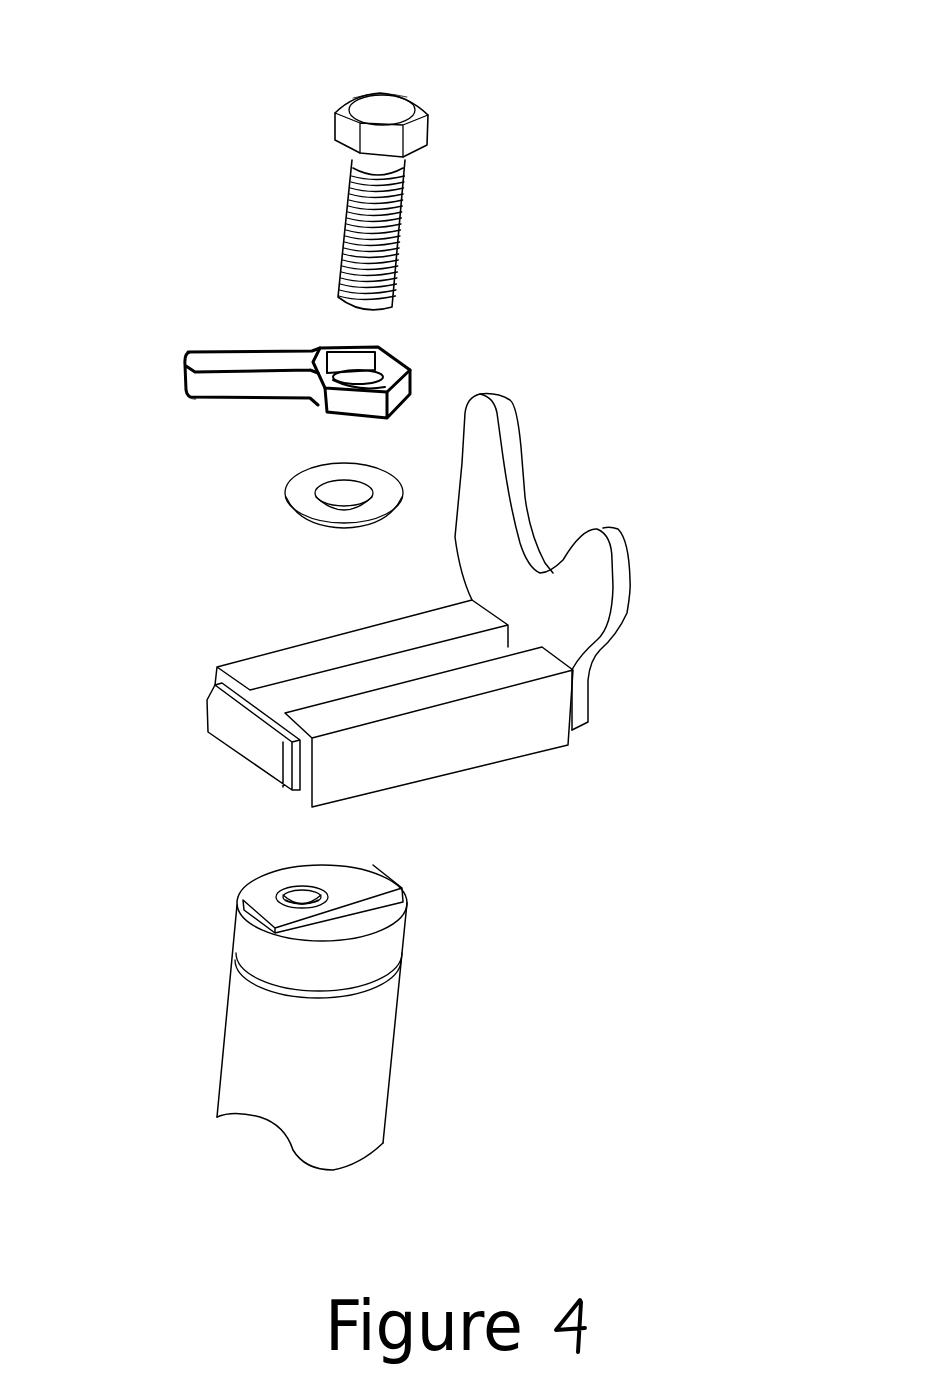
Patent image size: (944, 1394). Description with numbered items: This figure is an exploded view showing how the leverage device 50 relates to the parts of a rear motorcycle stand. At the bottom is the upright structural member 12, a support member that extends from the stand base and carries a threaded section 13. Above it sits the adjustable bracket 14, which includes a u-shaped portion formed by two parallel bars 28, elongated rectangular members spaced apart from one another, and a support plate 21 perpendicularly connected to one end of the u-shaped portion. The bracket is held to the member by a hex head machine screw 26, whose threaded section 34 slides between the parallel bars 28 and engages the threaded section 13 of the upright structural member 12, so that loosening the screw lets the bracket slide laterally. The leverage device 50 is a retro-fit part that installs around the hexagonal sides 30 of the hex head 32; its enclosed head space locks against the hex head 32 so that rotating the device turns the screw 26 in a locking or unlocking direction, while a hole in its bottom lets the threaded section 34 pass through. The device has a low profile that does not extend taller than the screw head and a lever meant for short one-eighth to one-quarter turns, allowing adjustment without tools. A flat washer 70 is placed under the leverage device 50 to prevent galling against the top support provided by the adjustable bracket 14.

The upright structural member 12 is at (266, 1017).
The threaded section 13 is at (285, 889).
The adjustable bracket 14 is at (423, 609).
The support plate 21 is at (520, 458).
The hex head machine screw 26 is at (372, 155).
The parallel bars 28 is at (282, 660).
The hexagonal sides 30 is at (350, 127).
The hex head 32 is at (378, 100).
The threaded section 34 is at (382, 245).
The leverage device 50 is at (426, 363).
The flat washer 70 is at (295, 487).